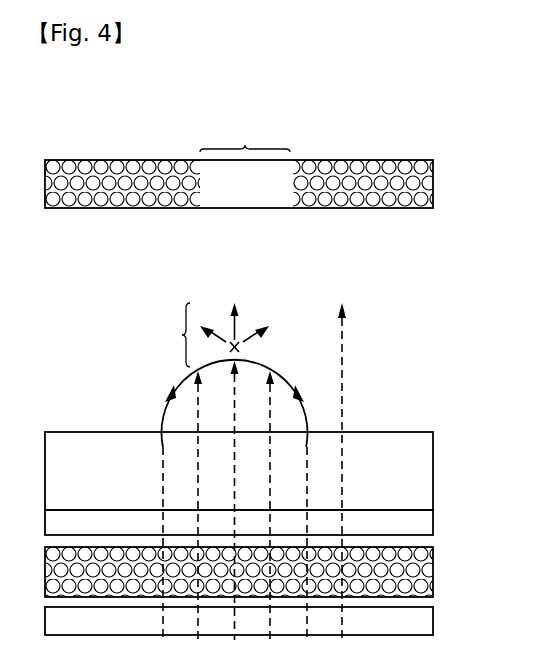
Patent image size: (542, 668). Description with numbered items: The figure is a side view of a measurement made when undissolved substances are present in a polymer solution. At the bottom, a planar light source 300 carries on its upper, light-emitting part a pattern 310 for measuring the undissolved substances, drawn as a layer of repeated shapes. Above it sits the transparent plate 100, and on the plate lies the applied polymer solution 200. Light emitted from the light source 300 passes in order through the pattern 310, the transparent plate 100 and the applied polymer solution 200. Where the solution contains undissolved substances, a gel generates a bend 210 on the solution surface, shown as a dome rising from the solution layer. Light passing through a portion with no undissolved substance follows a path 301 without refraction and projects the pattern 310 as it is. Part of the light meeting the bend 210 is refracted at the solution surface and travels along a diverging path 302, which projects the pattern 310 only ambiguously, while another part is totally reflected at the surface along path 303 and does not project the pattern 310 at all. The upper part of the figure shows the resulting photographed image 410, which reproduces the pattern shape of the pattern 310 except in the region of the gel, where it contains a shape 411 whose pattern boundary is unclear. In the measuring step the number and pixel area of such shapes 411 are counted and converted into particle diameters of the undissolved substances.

The image 410 is at (407, 182).
The shape with unclear pattern boundary 411 is at (245, 134).
The applied polymer solution 200 is at (407, 470).
The transparent plate 100 is at (407, 523).
The pattern for measuring undissolved substances 310 is at (407, 575).
The light source 300 is at (407, 620).
The bend 210 is at (273, 365).
The path without refraction 301 is at (345, 397).
The refracting path (divergence) 302 is at (203, 335).
The completely reflecting path (total reflection) 303 is at (171, 396).